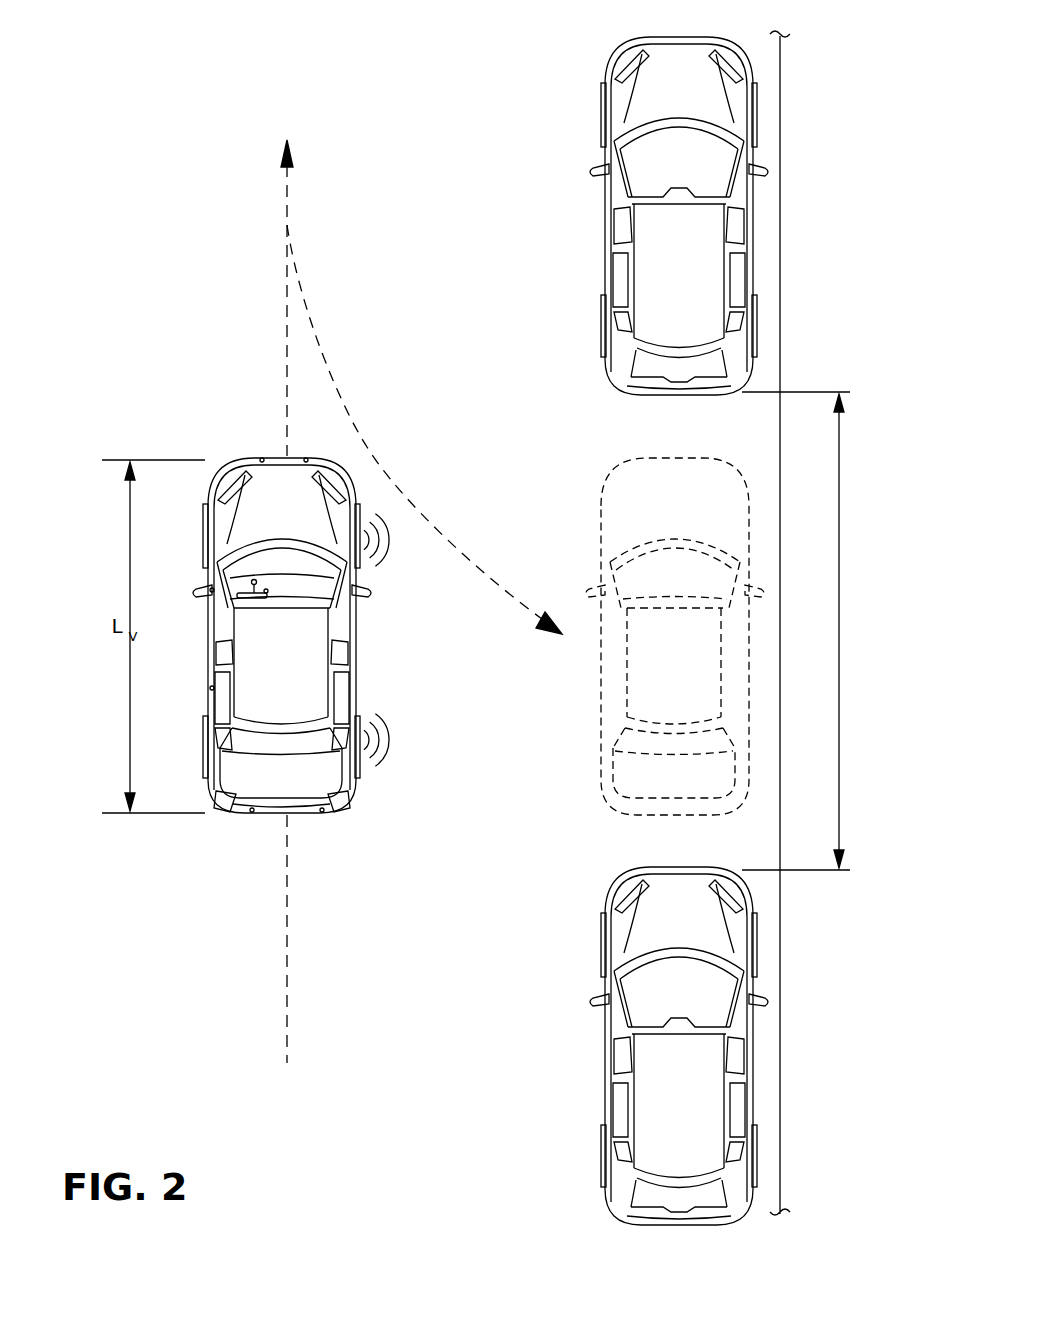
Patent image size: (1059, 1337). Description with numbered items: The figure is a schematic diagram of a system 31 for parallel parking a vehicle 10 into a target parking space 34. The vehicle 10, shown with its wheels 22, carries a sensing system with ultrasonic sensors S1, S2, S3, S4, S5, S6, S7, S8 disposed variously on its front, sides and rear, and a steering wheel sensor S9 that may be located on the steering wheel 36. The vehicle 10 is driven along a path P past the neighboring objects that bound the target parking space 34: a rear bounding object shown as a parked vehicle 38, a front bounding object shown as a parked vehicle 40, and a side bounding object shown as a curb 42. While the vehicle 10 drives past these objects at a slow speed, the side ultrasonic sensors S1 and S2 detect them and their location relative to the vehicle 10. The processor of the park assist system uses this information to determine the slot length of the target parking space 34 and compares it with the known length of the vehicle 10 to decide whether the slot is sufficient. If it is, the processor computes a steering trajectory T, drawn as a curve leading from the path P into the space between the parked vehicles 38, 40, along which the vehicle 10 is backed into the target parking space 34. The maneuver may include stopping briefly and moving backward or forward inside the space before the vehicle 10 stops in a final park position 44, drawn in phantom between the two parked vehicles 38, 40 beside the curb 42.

The vehicle 10 is at (196, 630).
The wheels 22 is at (358, 505).
The system 31 is at (172, 200).
The target parking space 34 is at (700, 650).
The steering wheel 36 is at (270, 599).
The parked vehicle 38 is at (607, 1045).
The parked vehicle 40 is at (607, 232).
The curb 42 is at (777, 467).
The final park position 44 is at (652, 460).
The ultrasonic sensor S1 is at (358, 550).
The ultrasonic sensor S2 is at (358, 713).
The ultrasonic sensor S3 is at (322, 812).
The ultrasonic sensor S4 is at (252, 812).
The ultrasonic sensor S5 is at (212, 688).
The ultrasonic sensor S6 is at (212, 590).
The ultrasonic sensor S7 is at (262, 460).
The ultrasonic sensor S8 is at (306, 460).
The steering wheel sensor S9 is at (267, 590).
The steering trajectory T is at (326, 352).
The path P is at (287, 1003).